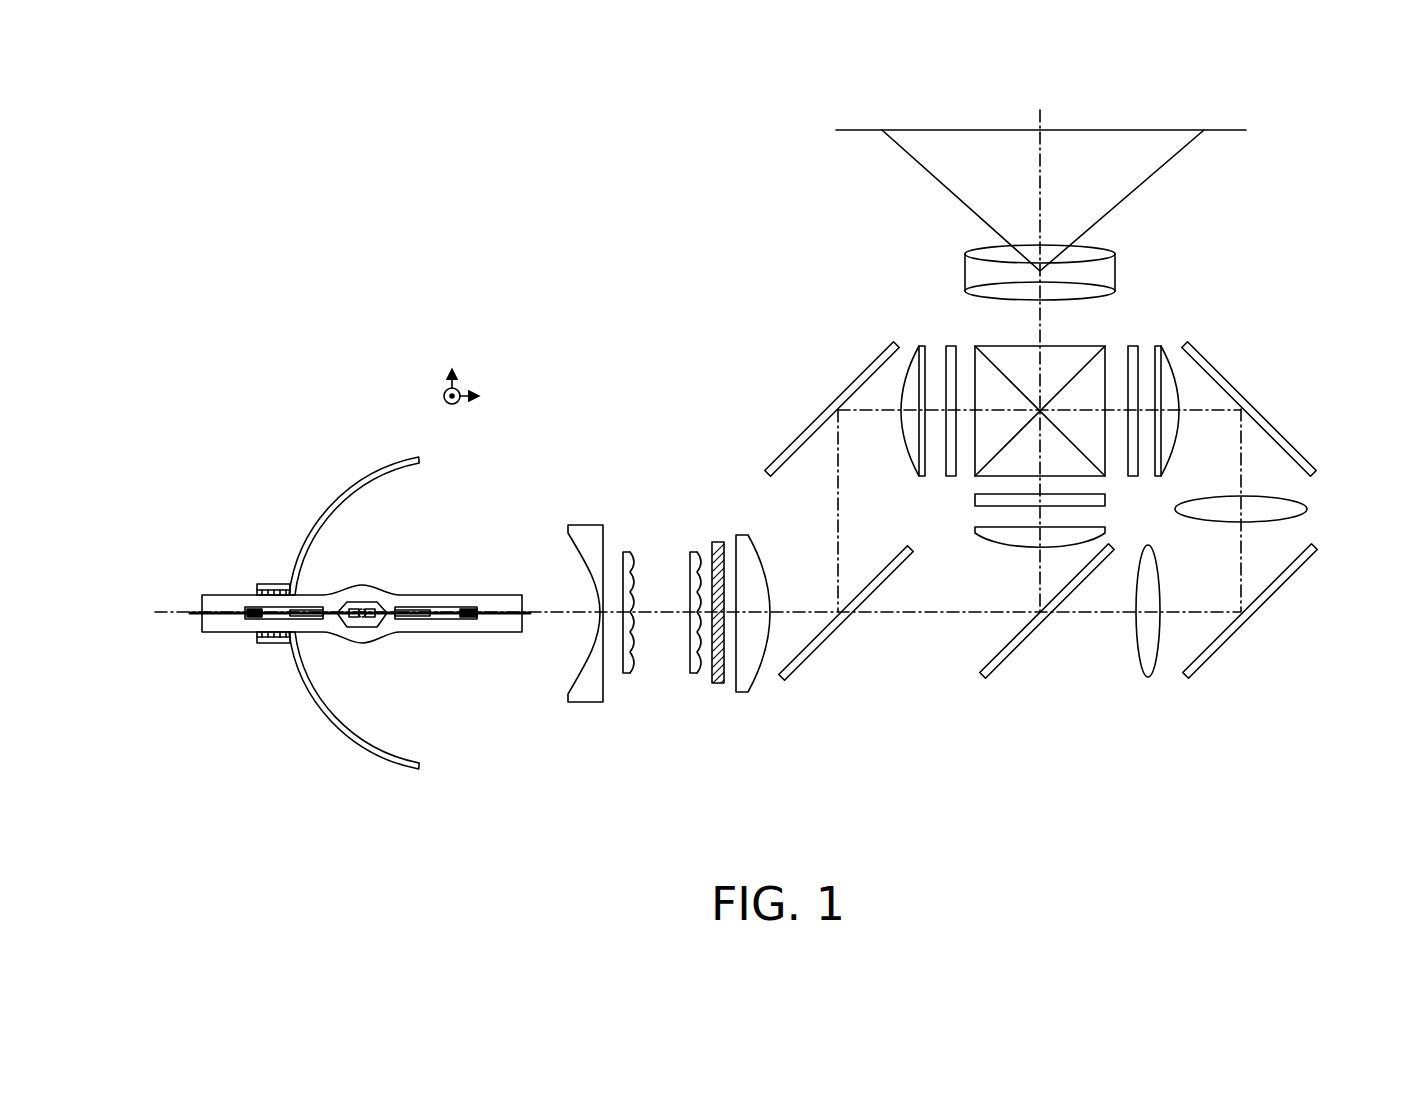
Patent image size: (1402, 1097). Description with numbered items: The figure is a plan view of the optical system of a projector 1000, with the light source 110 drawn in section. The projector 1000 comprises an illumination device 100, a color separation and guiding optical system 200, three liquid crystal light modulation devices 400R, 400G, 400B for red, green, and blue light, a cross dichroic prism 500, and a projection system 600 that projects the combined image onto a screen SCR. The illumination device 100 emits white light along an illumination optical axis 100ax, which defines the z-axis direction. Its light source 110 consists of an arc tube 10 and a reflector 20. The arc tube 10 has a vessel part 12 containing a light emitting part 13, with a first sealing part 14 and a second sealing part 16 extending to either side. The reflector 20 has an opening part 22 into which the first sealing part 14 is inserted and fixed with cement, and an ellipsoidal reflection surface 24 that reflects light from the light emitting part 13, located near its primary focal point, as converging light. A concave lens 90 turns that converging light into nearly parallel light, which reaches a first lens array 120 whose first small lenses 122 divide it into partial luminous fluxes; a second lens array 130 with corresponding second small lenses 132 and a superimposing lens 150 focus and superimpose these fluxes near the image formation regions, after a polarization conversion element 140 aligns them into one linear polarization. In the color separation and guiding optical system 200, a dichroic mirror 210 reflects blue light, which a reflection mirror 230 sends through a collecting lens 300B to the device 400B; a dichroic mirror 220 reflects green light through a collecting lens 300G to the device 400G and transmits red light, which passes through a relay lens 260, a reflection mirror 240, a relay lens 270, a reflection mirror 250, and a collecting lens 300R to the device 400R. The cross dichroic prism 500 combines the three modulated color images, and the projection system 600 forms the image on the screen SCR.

The projector 1000 is at (552, 348).
The illumination device 100 is at (340, 815).
The illumination optical axis 100ax is at (167, 616).
The light source 110 is at (377, 766).
The arc tube 10 is at (403, 560).
The vessel part 12 is at (360, 585).
The light emitting part 13 is at (367, 610).
The first sealing part 14 is at (236, 594).
The second sealing part 16 is at (490, 595).
The reflector 20 is at (320, 520).
The opening part 22 is at (272, 584).
The reflection surface 24 is at (333, 712).
The concave lens 90 is at (588, 703).
The first lens array 120 is at (628, 674).
The first small lens 122 is at (628, 553).
The second lens array 130 is at (692, 674).
The second small lens 132 is at (695, 553).
The polarization conversion element 140 is at (717, 684).
The superimposing lens 150 is at (742, 693).
The color separation and guiding optical system 200 is at (1045, 768).
The dichroic mirror 210 is at (797, 679).
The dichroic mirror 220 is at (1001, 679).
The reflection mirror 230 is at (771, 460).
The reflection mirror 240 is at (1201, 680).
The reflection mirror 250 is at (1272, 420).
The relay lens 260 is at (1143, 680).
The relay lens 270 is at (1308, 509).
The collecting lens 300B is at (892, 344).
The collecting lens 300G is at (975, 530).
The collecting lens 300R is at (1168, 344).
The liquid crystal light modulation device 400B is at (946, 344).
The liquid crystal light modulation device 400G is at (975, 500).
The liquid crystal light modulation device 400R is at (1130, 344).
The cross dichroic prism 500 is at (985, 344).
The projection system 600 is at (1118, 272).
The screen SCR is at (1214, 130).